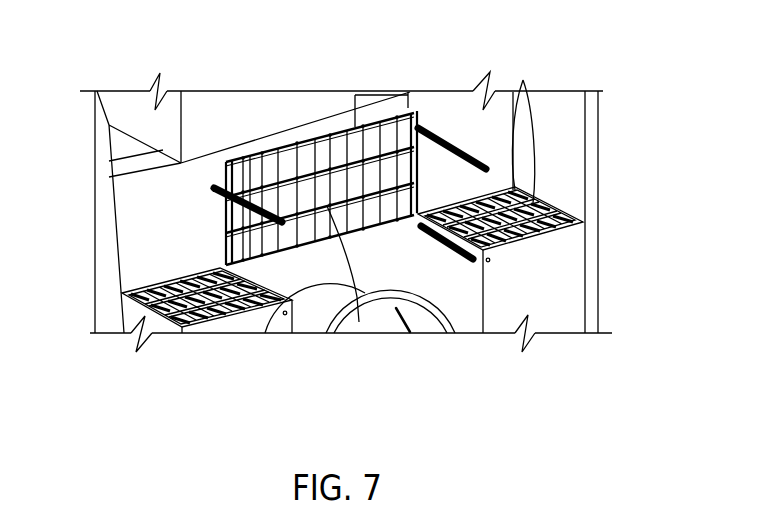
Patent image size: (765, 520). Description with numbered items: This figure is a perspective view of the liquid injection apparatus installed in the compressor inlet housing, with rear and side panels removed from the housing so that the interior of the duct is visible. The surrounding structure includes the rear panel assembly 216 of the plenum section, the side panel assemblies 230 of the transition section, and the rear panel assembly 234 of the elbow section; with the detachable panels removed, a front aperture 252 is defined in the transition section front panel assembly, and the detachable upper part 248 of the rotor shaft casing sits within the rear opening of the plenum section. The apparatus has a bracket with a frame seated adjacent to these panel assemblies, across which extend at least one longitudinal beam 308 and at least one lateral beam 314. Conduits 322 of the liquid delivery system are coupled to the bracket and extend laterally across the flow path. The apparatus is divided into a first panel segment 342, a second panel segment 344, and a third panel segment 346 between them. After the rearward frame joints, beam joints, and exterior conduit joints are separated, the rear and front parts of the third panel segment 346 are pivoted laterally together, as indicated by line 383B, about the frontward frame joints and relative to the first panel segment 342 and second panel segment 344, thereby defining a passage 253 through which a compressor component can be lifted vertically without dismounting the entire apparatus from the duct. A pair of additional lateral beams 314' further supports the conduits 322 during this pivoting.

The rear panel assembly 216 is at (559, 307).
The side panel assemblies 230 is at (568, 116).
The rear panel assembly 234 is at (208, 107).
The detachable upper part 248 is at (444, 316).
The front aperture 252 is at (391, 101).
The passage 253 is at (416, 264).
The longitudinal beam 308 is at (528, 128).
The lateral beam 314 is at (340, 296).
The additional lateral beams 314' is at (302, 127).
The conduit 322 is at (360, 330).
The first panel segment 342 is at (158, 277).
The second panel segment 344 is at (565, 196).
The third panel segment 346 is at (220, 229).
The line 383B is at (374, 110).